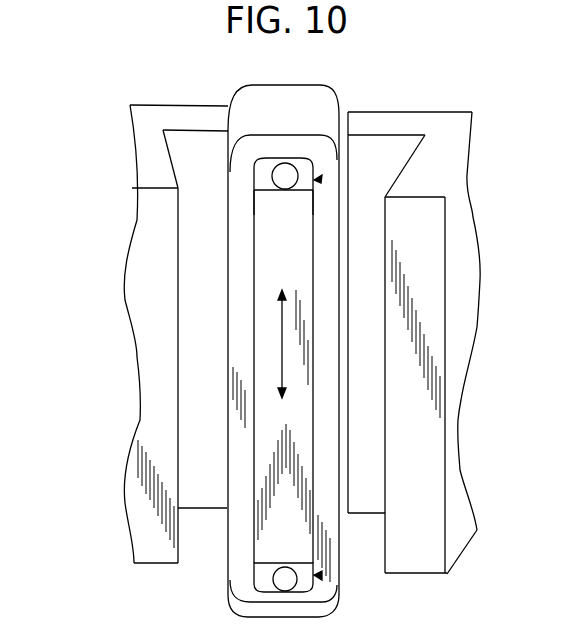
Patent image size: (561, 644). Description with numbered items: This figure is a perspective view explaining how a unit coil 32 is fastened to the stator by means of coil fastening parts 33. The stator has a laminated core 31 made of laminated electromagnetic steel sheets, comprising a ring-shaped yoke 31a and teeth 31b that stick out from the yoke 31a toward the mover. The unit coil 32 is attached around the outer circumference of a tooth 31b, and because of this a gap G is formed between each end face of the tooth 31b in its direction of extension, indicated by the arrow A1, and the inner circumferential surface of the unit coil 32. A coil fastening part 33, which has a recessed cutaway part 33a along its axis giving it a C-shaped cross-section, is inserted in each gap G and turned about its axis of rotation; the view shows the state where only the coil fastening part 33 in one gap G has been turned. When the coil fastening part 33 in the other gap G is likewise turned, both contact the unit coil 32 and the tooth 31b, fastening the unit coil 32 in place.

The laminated core 31 is at (135, 97).
The yoke 31a is at (213, 108).
The tooth 31b is at (268, 540).
The unit coil 32 is at (282, 107).
The coil fastening part 33 is at (283, 189).
The cutaway part 33a is at (280, 586).
The gap G is at (320, 178).
The direction of extension of the teeth A1 is at (278, 341).